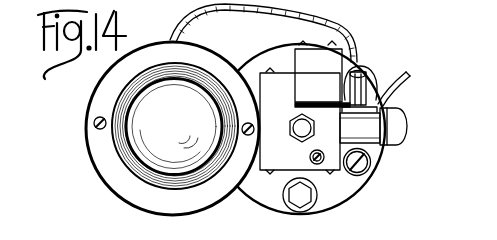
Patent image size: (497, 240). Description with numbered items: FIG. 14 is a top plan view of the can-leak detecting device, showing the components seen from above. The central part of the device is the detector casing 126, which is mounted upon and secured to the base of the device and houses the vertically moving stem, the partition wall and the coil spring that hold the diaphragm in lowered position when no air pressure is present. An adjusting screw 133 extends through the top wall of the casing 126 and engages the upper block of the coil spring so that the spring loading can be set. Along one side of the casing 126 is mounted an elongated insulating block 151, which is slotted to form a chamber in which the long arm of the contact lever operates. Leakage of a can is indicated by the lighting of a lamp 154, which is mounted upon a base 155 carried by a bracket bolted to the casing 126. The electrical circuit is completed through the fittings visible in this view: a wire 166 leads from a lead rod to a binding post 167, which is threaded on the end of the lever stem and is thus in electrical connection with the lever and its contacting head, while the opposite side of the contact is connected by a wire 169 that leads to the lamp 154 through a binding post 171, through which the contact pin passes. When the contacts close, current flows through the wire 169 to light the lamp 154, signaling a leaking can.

The detector casing 126 is at (296, 158).
The adjusting screw 133 is at (292, 130).
The insulating block 151 is at (322, 74).
The lamp 154 is at (175, 126).
The base 155 is at (98, 152).
The wire 166 is at (412, 92).
The binding post 167 is at (408, 128).
The wire 169 is at (344, 26).
The binding post 171 is at (370, 86).